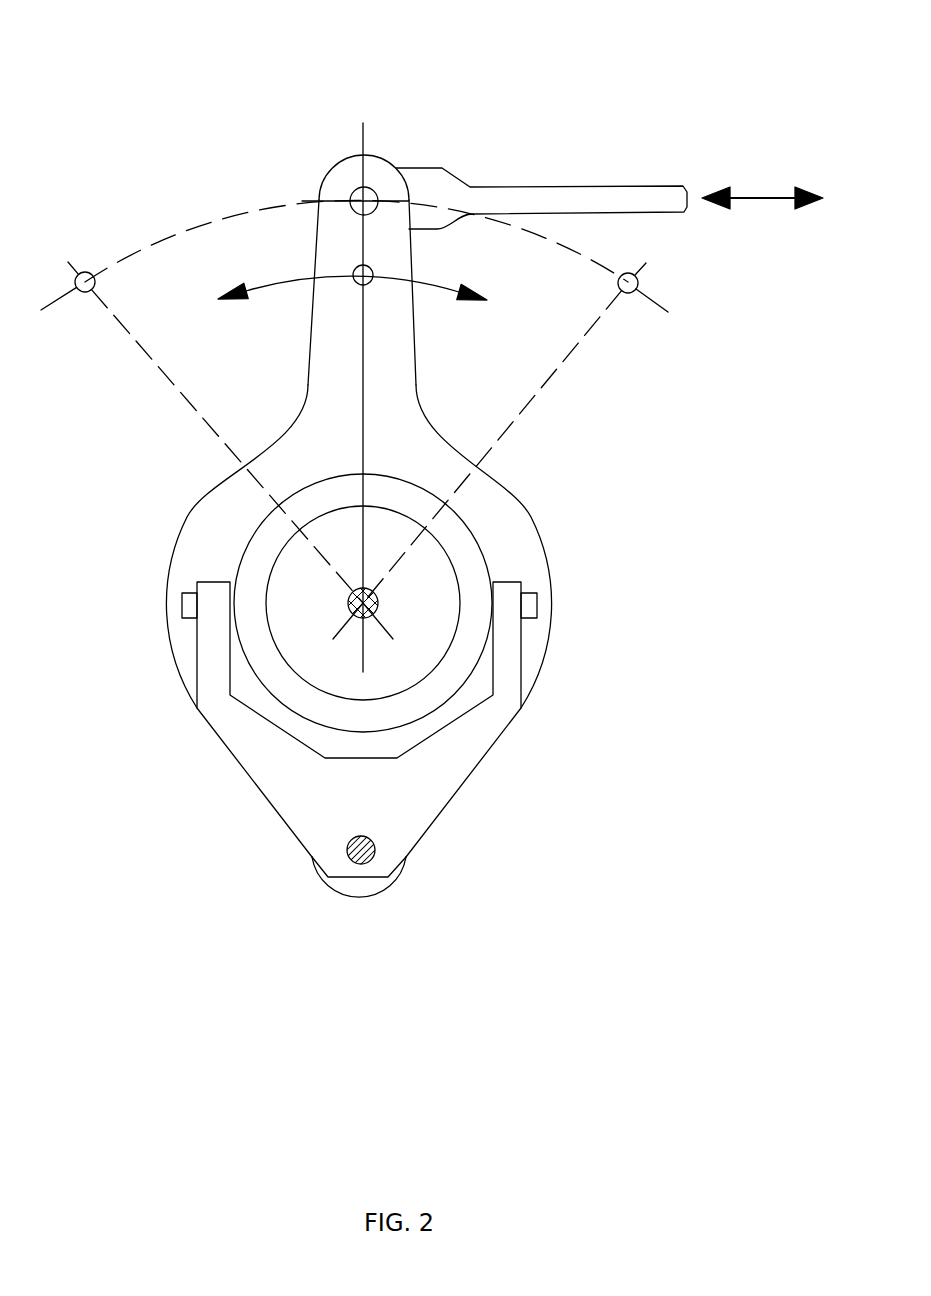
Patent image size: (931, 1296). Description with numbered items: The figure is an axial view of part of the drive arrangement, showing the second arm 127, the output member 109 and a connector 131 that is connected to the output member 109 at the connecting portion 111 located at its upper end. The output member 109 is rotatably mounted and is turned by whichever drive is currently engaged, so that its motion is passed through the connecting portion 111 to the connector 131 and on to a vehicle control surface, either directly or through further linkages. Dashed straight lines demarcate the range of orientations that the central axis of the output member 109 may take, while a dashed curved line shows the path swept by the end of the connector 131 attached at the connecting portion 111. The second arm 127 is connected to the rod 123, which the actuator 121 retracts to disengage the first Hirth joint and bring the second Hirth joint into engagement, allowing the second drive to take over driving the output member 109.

The output member 109 is at (460, 659).
The connecting portion 111 is at (404, 158).
The connector 131 is at (588, 187).
The second arm 127 is at (483, 762).
The actuator 121 is at (382, 892).
The rod 123 is at (343, 855).